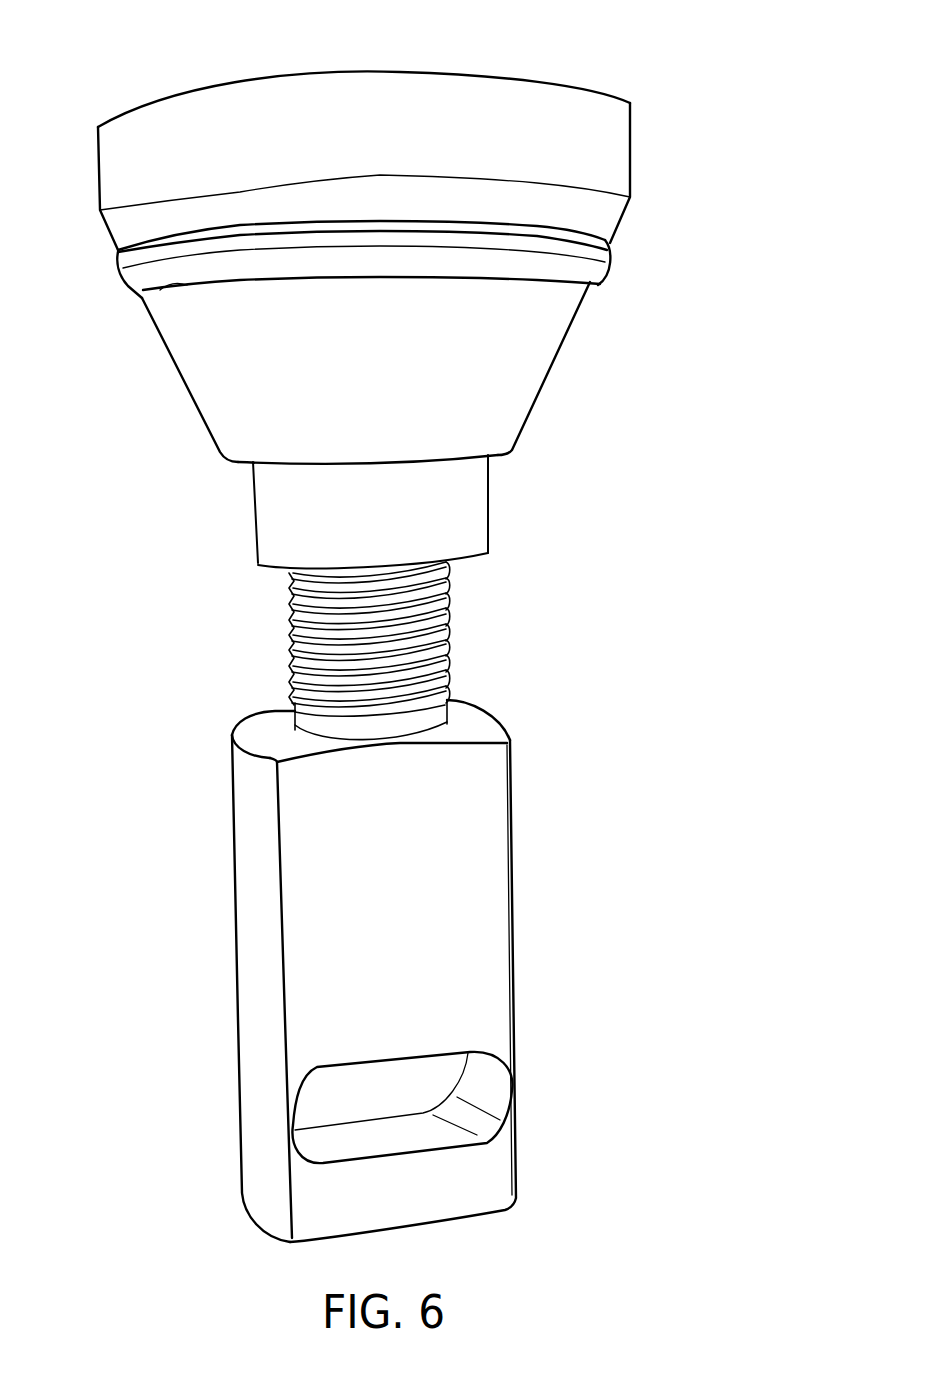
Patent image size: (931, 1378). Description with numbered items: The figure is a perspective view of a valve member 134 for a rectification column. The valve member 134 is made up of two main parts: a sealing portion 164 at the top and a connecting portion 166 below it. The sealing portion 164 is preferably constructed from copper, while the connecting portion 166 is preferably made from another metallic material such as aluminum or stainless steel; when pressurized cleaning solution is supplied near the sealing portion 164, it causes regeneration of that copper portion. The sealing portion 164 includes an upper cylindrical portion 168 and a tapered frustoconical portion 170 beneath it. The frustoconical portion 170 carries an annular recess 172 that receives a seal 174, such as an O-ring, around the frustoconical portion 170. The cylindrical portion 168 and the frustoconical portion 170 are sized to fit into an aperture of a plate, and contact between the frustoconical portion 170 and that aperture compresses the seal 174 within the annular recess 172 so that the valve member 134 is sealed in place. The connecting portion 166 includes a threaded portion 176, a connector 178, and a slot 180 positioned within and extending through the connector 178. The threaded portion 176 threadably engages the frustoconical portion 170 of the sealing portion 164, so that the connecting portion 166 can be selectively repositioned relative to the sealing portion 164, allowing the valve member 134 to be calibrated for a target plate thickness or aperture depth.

The valve member 134 is at (678, 111).
The cylindrical portion 168 is at (507, 103).
The seal 174 is at (610, 270).
The annular recess 172 is at (182, 290).
The sealing portion 164 is at (577, 392).
The frustoconical portion 170 is at (227, 377).
The threaded portion 176 is at (292, 660).
The connecting portion 166 is at (527, 717).
The connector 178 is at (460, 873).
The slot 180 is at (427, 1053).